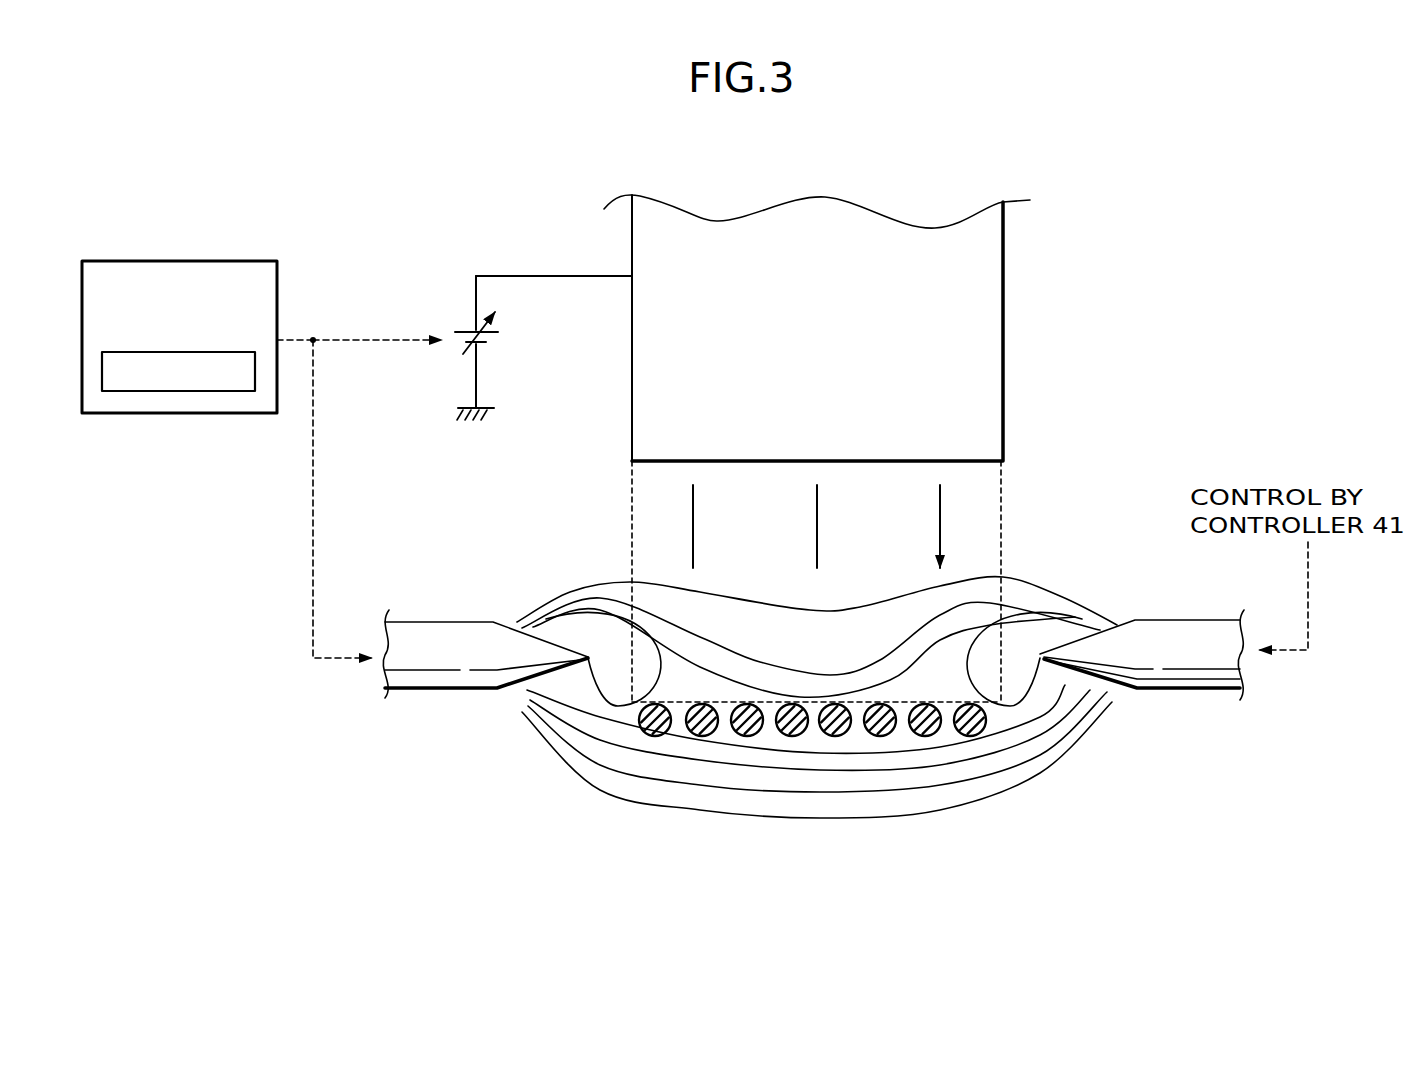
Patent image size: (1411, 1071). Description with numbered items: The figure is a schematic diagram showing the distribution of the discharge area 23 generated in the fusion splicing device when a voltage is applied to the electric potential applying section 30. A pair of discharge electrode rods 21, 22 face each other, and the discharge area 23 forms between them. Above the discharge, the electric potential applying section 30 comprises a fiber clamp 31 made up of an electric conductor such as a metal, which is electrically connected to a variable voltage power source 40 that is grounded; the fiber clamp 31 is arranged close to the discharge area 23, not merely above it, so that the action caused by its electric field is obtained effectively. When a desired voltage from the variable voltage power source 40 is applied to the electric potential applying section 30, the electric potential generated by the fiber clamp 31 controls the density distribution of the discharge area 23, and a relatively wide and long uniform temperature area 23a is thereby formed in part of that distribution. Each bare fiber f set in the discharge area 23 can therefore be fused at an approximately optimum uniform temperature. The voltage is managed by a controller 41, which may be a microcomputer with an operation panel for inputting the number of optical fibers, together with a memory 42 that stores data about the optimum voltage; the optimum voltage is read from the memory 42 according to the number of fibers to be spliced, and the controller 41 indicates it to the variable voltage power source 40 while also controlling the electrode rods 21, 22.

The controller 41 is at (233, 261).
The memory 42 is at (135, 391).
The variable voltage power source 40 is at (467, 323).
The electric potential applying section 30 is at (874, 328).
The fiber clamp 31 is at (1003, 320).
The electrode rod 22 is at (430, 690).
The electrode rod 21 is at (1180, 690).
The discharge area 23 is at (653, 806).
The uniform temperature area 23a is at (903, 745).
The bare fiber f is at (792, 738).